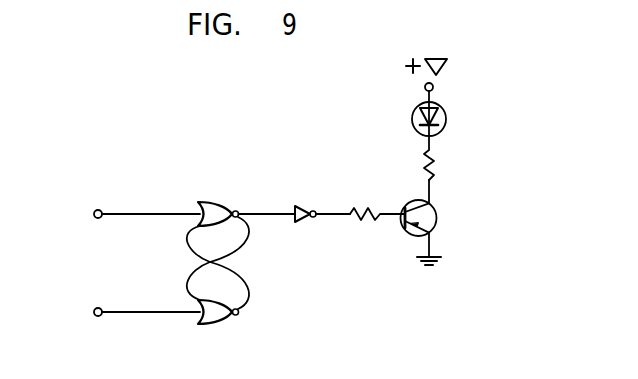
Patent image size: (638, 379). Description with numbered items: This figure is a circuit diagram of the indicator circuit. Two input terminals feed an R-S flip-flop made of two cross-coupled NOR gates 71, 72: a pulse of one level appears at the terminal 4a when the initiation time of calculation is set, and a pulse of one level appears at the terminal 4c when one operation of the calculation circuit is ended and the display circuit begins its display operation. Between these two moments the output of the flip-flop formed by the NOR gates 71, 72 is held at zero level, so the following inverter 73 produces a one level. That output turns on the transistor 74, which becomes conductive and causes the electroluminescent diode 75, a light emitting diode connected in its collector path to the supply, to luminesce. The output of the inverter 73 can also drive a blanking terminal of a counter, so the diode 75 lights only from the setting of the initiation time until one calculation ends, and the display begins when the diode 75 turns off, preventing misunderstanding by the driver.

The terminal 4a is at (98, 210).
The terminal 4c is at (98, 308).
The NOR gate 71 is at (225, 201).
The NOR gate 72 is at (222, 322).
The inverter 73 is at (308, 205).
The transistor 74 is at (437, 213).
The electroluminescent diode 75 is at (446, 117).